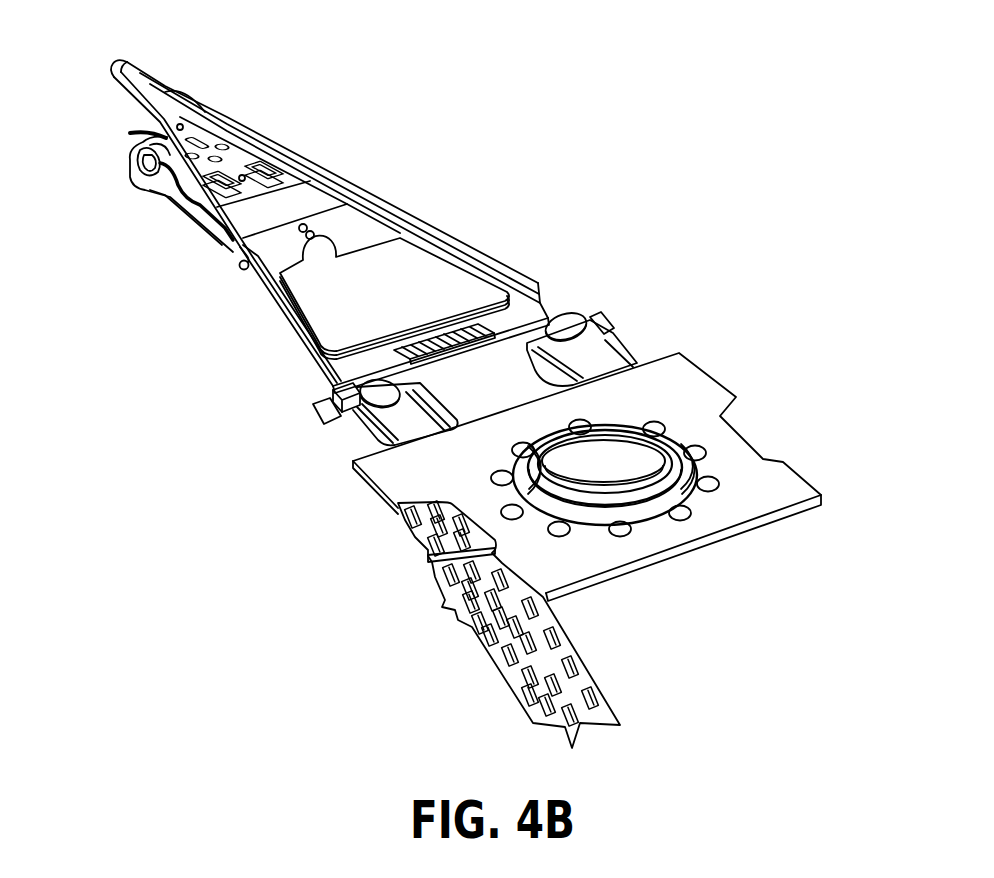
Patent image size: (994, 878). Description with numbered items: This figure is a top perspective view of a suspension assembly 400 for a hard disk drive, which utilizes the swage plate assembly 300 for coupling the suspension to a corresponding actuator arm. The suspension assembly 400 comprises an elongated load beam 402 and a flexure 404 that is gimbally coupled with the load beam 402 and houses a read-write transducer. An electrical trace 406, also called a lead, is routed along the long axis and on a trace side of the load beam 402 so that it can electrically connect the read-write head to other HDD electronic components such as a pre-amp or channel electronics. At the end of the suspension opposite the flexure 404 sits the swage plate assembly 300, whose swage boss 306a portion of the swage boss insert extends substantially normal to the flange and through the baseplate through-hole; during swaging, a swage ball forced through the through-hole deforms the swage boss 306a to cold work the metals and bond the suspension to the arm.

The suspension assembly 400 is at (266, 56).
The load beam 402 is at (372, 228).
The flexure 404 is at (138, 183).
The swage plate assembly 300 is at (704, 353).
The swage boss 306a is at (643, 506).
The electrical trace 406 is at (578, 687).